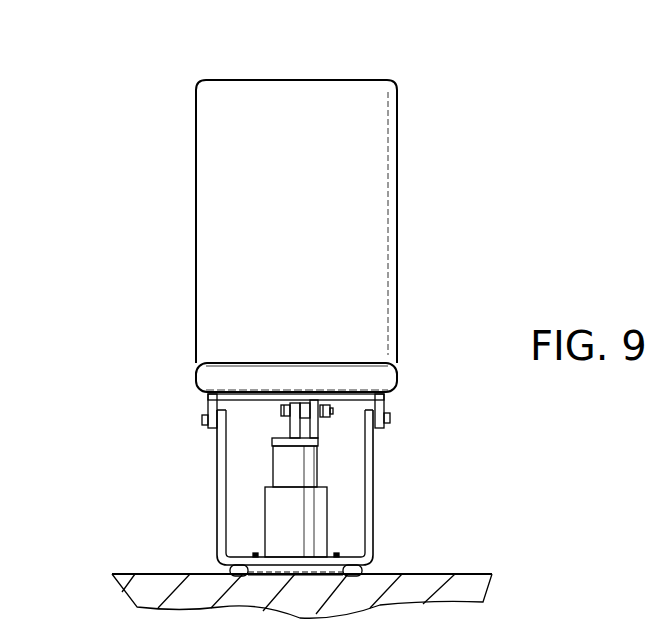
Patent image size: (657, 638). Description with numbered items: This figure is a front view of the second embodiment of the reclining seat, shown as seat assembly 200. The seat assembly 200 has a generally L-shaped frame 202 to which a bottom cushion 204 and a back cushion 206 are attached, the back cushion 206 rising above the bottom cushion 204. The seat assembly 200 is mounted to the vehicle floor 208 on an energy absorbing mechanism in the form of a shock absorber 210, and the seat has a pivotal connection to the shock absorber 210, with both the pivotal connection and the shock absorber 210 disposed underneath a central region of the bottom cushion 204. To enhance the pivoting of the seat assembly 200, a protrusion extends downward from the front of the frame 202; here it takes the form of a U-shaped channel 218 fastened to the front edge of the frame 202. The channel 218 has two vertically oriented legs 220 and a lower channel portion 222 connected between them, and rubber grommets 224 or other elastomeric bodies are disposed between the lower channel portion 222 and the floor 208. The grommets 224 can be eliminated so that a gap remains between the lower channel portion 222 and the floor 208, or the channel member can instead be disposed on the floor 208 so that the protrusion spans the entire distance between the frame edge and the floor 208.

The seat assembly 200 is at (437, 100).
The frame 202 is at (385, 400).
The bottom cushion 204 is at (308, 363).
The back cushion 206 is at (338, 80).
The vehicle floor 208 is at (125, 572).
The shock absorber 210 is at (327, 508).
The U-shaped channel 218 is at (217, 440).
The vertically oriented legs 220 is at (217, 495).
The lower channel portion 222 is at (289, 557).
The rubber grommets 224 is at (360, 573).